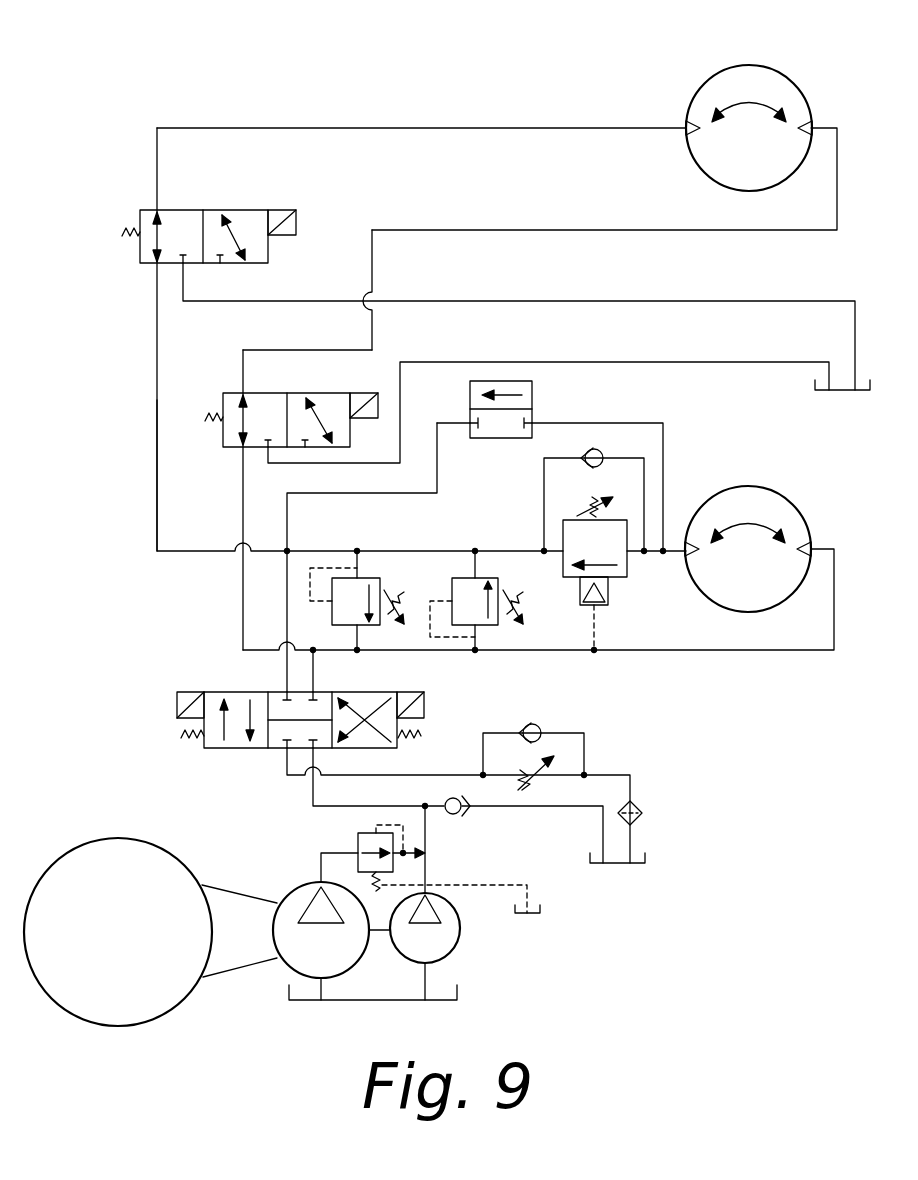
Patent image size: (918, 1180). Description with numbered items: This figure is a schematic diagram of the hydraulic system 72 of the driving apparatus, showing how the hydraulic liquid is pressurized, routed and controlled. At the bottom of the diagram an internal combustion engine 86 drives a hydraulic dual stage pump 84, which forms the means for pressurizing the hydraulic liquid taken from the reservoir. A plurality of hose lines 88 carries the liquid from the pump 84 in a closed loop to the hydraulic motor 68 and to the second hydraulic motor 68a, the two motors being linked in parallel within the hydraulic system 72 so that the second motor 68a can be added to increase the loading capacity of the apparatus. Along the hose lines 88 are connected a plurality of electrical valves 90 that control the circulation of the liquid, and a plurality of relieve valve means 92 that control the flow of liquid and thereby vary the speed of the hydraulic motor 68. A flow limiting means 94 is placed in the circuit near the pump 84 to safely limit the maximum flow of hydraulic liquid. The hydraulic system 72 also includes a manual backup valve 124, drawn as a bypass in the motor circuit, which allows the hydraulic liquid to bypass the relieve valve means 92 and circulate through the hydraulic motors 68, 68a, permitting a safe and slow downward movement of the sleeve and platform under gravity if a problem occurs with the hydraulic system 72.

The second hydraulic motor 68a is at (705, 84).
The hydraulic motor 68 is at (752, 488).
The hydraulic system 72 is at (157, 522).
The hydraulic dual stage pump 84 is at (415, 950).
The internal combustion engine 86 is at (172, 855).
The hose lines 88 is at (565, 232).
The electrical valves 90 is at (138, 258).
The relieve valve means 92 is at (360, 620).
The flow limiting means 94 is at (537, 787).
The manual backup valve 124 is at (535, 400).